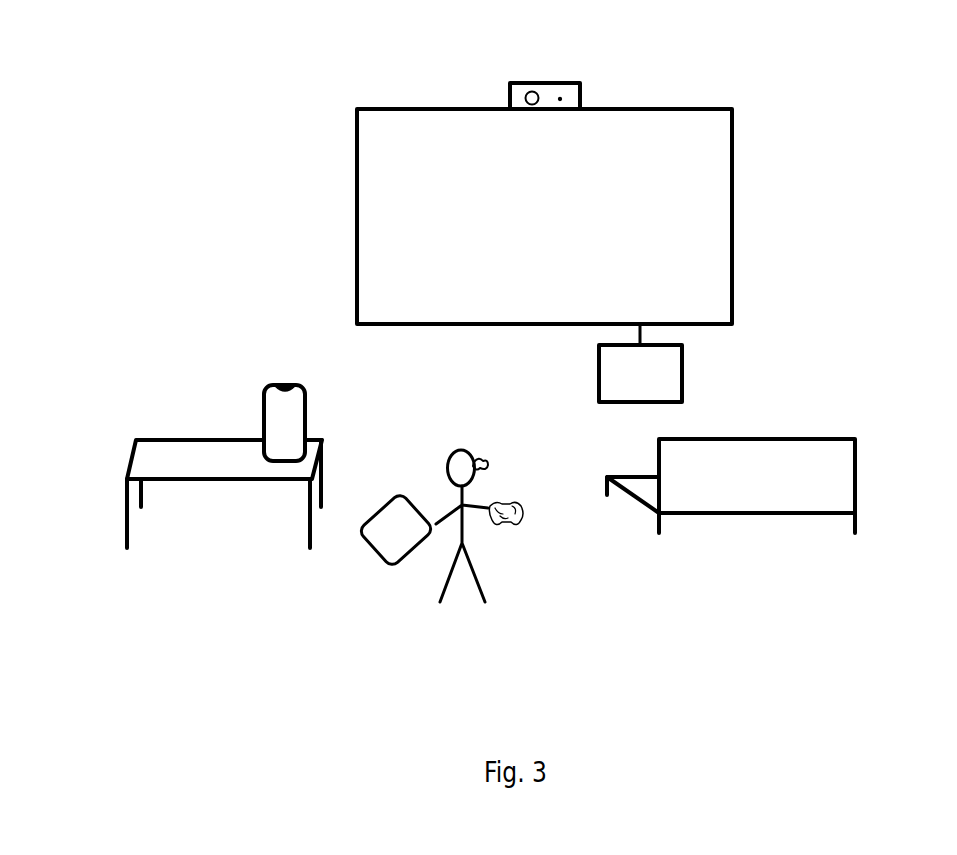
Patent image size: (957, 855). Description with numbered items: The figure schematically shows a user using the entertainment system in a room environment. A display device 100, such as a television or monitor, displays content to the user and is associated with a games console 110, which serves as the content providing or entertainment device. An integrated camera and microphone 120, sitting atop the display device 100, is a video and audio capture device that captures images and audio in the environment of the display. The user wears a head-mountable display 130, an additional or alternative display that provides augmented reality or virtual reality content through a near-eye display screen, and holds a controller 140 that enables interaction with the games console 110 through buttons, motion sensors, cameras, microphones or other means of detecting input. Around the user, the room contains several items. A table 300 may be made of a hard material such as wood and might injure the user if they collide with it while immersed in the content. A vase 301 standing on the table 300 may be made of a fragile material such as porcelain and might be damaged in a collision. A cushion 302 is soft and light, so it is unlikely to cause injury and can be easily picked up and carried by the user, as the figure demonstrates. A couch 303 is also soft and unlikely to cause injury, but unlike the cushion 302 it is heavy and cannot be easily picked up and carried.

The display device 100 is at (733, 227).
The games console 110 is at (685, 378).
The integrated camera and microphone 120 is at (523, 82).
The head-mountable display 130 is at (492, 465).
The controller 140 is at (503, 527).
The table 300 is at (133, 457).
The vase 301 is at (262, 404).
The cushion 302 is at (371, 551).
The couch 303 is at (857, 489).